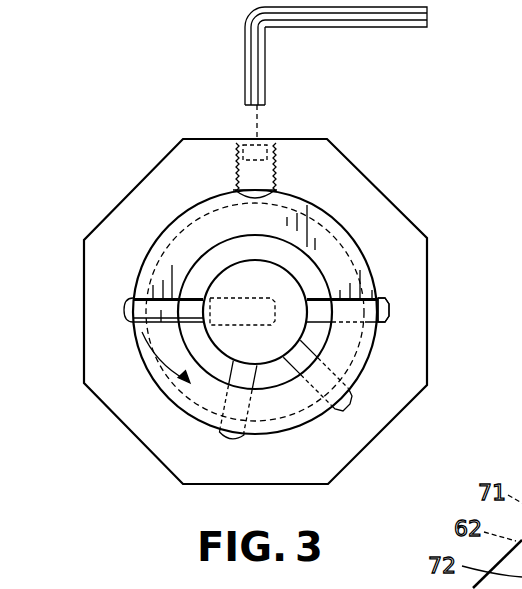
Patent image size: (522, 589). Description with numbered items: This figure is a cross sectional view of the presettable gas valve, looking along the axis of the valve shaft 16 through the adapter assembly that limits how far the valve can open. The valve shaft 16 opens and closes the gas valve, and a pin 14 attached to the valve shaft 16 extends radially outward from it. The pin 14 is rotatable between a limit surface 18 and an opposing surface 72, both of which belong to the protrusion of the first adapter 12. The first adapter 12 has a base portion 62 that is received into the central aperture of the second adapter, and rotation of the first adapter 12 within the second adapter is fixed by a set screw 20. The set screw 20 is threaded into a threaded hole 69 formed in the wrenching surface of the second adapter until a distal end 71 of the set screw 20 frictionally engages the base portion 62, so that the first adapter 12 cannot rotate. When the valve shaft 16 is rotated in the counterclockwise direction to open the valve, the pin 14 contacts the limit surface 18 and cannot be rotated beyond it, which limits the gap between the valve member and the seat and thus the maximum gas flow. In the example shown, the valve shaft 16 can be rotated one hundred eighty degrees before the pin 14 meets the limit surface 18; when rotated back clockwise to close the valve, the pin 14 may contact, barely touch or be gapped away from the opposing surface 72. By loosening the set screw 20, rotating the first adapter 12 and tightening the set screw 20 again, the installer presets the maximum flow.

The first adapter 12 is at (340, 260).
The pin 14 is at (388, 301).
The valve shaft 16 is at (283, 275).
The limit surface 18 is at (352, 300).
The set screw 20 is at (263, 175).
The base portion 62 is at (190, 166).
The threaded hole 69 is at (276, 130).
The distal end 71 is at (233, 188).
The opposing surface 72 is at (135, 323).